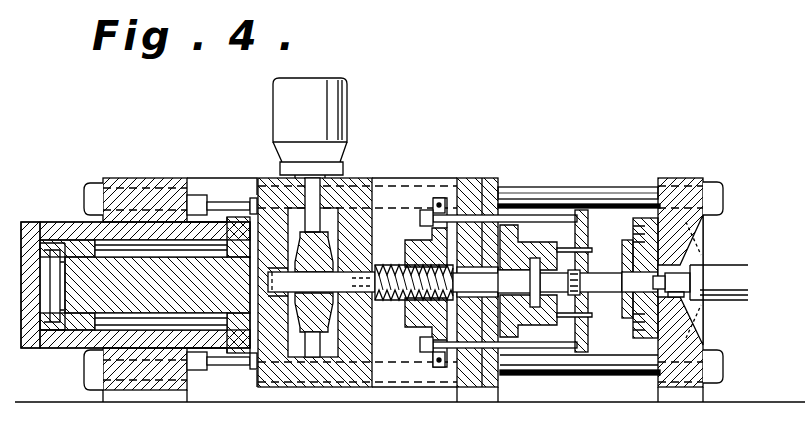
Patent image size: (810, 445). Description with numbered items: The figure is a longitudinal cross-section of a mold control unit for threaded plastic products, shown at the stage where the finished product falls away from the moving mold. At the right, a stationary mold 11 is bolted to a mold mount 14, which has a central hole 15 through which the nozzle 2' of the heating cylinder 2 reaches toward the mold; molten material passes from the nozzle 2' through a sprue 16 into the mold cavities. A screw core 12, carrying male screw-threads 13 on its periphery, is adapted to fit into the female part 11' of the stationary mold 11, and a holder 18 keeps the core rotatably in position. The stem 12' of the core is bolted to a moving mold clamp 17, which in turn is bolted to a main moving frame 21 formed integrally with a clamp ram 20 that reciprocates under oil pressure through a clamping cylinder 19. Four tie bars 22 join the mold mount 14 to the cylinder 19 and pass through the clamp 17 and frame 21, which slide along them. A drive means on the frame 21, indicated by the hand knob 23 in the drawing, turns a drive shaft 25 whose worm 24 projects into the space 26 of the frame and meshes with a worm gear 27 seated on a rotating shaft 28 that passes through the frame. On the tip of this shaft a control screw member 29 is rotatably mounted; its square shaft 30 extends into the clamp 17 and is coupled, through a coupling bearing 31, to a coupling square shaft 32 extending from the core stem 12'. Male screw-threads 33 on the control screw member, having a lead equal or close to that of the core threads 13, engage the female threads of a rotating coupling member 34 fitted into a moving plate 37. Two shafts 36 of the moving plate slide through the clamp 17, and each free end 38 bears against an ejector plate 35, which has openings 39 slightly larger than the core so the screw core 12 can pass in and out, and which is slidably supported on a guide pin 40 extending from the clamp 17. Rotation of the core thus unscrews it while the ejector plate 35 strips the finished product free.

The heating cylinder 2 is at (720, 272).
The nozzle 2' is at (690, 261).
The stationary mold 11 is at (635, 276).
The female part 11' is at (615, 290).
The core 12 is at (529, 318).
The stem 12' is at (537, 249).
The male screw-threads 13 is at (586, 280).
The mold mount 14 is at (676, 186).
The central hole 15 is at (677, 296).
The sprue 16 is at (680, 280).
The moving mold clamp 17 is at (473, 184).
The holder 18 is at (502, 274).
The clamping cylinder 19 is at (58, 234).
The clamp ram 20 is at (178, 292).
The main moving frame 21 is at (355, 364).
The tie bars 22 is at (197, 194).
The hand knob 23 is at (347, 106).
The worm 24 is at (327, 258).
The drive shaft 25 is at (312, 218).
The space 26 is at (311, 336).
The worm gear 27 is at (330, 338).
The rotating shaft 28 is at (280, 302).
The control screw member 29 is at (403, 300).
The square shaft 30 is at (470, 356).
The coupling bearing 31 is at (477, 357).
The coupling square shaft 32 is at (505, 343).
The male screw-threads 33 is at (378, 265).
The rotating coupling member 34 is at (402, 240).
The ejector plate 35 is at (581, 210).
The shafts 36 is at (529, 204).
The moving plate 37 is at (425, 208).
The free end 38 is at (560, 217).
The openings 39 is at (582, 298).
The guide pin 40 is at (592, 352).